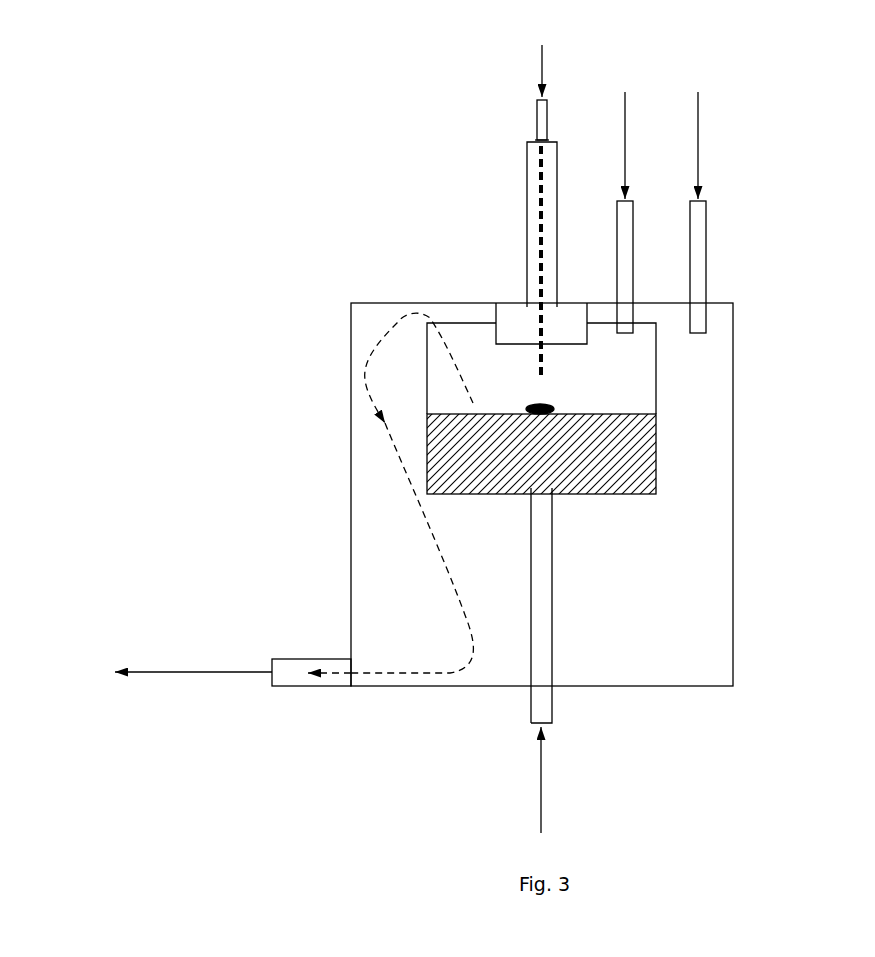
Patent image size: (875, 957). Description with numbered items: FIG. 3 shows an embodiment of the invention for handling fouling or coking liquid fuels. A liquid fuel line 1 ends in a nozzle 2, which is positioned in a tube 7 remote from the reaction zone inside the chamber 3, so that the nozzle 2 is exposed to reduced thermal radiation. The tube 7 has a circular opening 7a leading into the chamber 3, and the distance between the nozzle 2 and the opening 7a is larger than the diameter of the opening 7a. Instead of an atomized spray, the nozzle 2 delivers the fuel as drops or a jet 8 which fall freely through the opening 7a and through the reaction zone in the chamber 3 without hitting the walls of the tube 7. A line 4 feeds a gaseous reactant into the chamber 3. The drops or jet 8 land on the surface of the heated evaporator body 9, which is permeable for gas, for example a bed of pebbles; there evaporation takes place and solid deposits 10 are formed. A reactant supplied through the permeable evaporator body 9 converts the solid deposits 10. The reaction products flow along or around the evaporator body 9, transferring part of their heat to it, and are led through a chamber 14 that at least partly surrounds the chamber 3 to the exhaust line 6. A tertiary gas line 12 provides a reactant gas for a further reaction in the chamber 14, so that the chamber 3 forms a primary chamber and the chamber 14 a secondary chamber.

The liquid fuel line 1 is at (551, 107).
The nozzle 2 is at (538, 140).
The chamber 3 is at (622, 385).
The line 4 is at (617, 240).
The exhaust line 6 is at (312, 657).
The tube 7 is at (527, 207).
The opening 7a is at (530, 302).
The drops or jet 8 is at (537, 367).
The evaporator body 9 is at (627, 460).
The solid deposits 10 is at (520, 405).
The tertiary gas line 12 is at (705, 238).
The chamber 14 is at (670, 590).